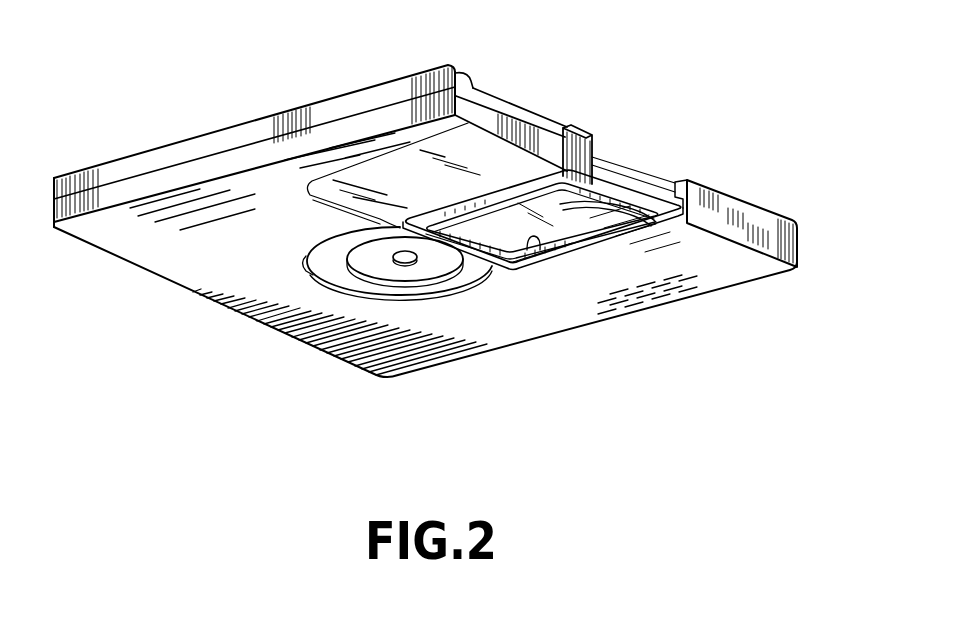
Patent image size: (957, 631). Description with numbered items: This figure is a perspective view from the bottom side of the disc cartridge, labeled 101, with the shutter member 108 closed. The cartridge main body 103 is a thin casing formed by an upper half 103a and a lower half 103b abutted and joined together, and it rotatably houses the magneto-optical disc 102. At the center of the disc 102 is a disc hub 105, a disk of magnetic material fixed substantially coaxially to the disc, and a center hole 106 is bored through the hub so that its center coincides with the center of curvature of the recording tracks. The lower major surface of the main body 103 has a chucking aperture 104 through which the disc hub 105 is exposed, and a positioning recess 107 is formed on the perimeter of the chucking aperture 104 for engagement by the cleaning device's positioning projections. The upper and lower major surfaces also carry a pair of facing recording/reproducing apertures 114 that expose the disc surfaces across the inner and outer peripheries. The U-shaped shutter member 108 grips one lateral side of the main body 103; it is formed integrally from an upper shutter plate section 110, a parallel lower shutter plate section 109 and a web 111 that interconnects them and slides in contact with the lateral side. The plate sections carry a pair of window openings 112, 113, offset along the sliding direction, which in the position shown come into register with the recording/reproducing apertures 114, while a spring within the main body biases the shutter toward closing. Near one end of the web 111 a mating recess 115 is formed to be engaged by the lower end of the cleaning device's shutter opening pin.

The base plate 101 is at (613, 342).
The magneto-optical disc 102 is at (618, 173).
The cartridge main body 103 is at (254, 118).
The upper half 103a is at (150, 150).
The lower half 103b is at (198, 165).
The chucking aperture 104 is at (363, 280).
The disc hub 105 is at (388, 273).
The center hole 106 is at (413, 260).
The positioning recess 107 is at (307, 277).
The shutter member 108 is at (767, 193).
The lower shutter plate section 109 is at (710, 260).
The upper shutter plate section 110 is at (678, 180).
The web 111 is at (753, 218).
The window opening 112 is at (567, 250).
The window opening 113 is at (605, 143).
The recording/reproducing apertures 114 is at (530, 250).
The mating recess 115 is at (457, 96).